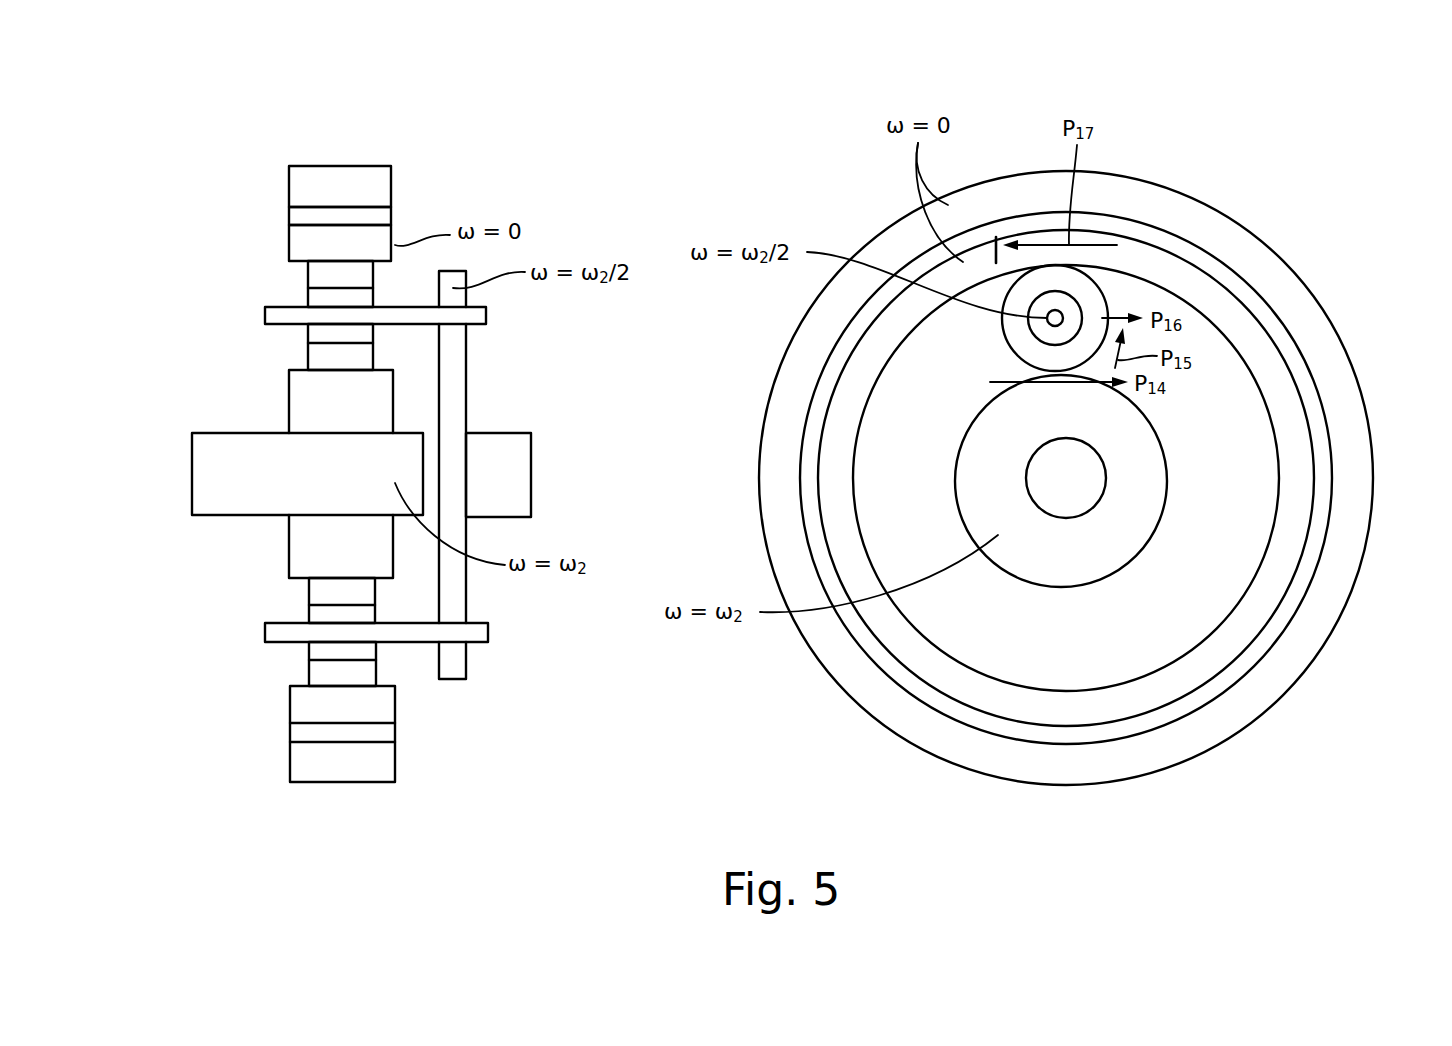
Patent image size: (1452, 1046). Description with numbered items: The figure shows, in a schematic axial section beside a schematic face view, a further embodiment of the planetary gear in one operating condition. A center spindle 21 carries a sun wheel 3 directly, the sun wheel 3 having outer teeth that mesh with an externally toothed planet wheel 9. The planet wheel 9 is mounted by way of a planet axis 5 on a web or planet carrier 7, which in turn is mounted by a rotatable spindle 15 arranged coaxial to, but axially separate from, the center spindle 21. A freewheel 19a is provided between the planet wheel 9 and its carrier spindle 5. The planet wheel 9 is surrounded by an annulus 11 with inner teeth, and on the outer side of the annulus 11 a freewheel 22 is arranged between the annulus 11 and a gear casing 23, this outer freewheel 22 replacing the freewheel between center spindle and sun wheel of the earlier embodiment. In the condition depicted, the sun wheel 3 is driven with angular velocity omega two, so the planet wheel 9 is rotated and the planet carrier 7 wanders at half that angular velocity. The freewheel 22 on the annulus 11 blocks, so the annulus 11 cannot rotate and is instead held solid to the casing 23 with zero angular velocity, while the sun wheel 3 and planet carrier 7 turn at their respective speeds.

The sun wheel 3 is at (305, 412).
The planet axis 5 is at (278, 315).
The planet carrier 7 is at (457, 360).
The planet wheel 9 is at (318, 275).
The annulus 11 is at (305, 245).
The rotatable spindle 15 is at (513, 472).
The freewheel 19a is at (318, 338).
The center spindle 21 is at (210, 476).
The freewheel 22 is at (305, 215).
The gear casing 23 is at (345, 180).